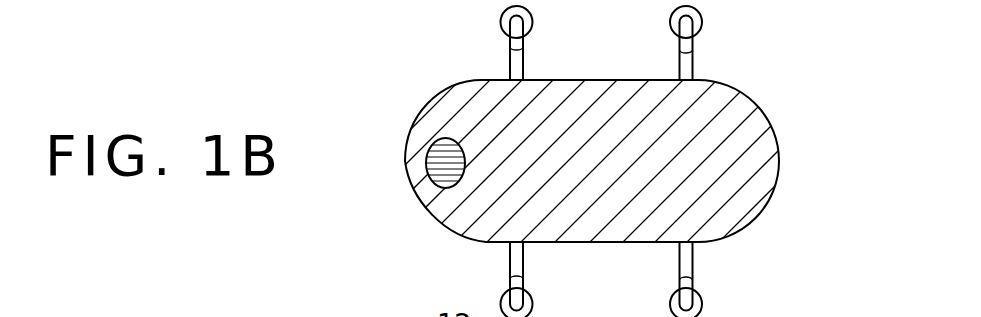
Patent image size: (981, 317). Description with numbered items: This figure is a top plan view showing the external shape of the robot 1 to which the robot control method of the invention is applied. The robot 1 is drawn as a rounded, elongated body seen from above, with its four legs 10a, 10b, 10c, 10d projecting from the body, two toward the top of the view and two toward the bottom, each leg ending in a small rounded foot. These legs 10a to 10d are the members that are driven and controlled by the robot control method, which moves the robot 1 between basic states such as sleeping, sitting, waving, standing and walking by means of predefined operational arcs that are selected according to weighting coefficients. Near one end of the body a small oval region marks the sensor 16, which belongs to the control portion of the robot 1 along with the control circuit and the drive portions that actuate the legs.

The robot 1 is at (779, 162).
The sensor 16 is at (425, 180).
The leg 10a is at (523, 62).
The leg 10b is at (523, 264).
The leg 10c is at (692, 62).
The leg 10d is at (692, 268).